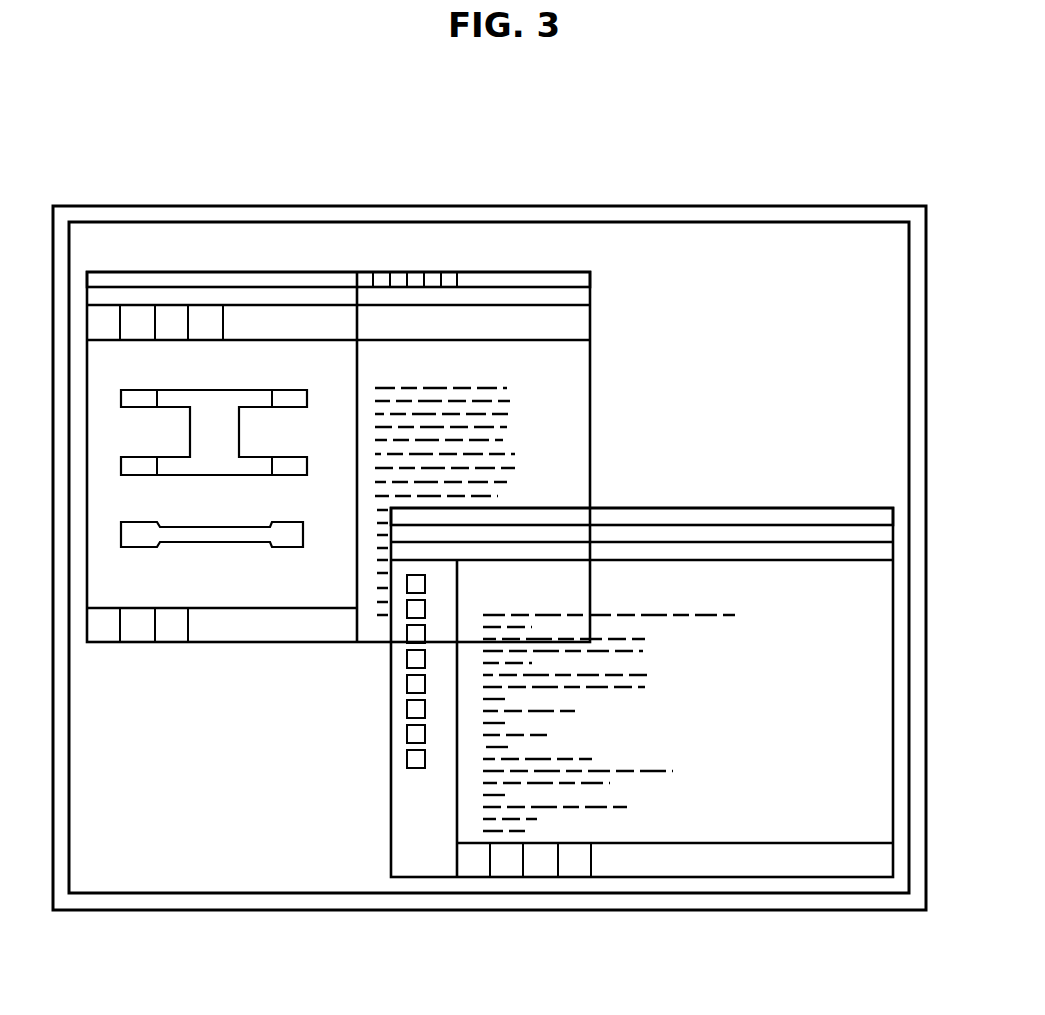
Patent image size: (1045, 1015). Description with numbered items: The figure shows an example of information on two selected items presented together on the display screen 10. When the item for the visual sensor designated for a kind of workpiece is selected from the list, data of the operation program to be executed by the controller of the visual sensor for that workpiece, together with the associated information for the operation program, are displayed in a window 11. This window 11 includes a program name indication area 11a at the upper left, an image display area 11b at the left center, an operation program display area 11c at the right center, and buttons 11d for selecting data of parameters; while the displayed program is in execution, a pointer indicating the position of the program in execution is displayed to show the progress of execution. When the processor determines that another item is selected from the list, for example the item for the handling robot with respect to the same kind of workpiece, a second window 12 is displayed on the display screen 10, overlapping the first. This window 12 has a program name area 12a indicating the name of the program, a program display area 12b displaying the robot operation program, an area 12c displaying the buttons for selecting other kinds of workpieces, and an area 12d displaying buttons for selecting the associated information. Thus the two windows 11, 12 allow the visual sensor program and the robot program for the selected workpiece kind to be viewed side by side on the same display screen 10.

The display screen 10 is at (752, 208).
The window 11 is at (530, 262).
The program name indication area 11a is at (112, 280).
The image display area 11b is at (240, 583).
The operation program display area 11c is at (378, 350).
The buttons 11d is at (102, 637).
The window 12 is at (822, 497).
The program name area 12a is at (630, 517).
The program display area 12b is at (742, 825).
The area displaying buttons for selecting other kinds of workpieces 12c is at (419, 860).
The area displaying buttons for selecting associated information 12d is at (478, 867).